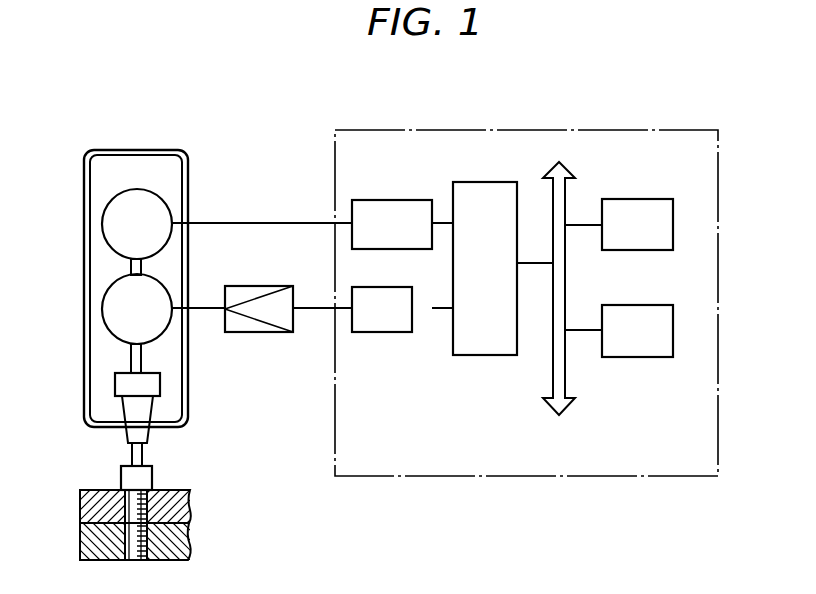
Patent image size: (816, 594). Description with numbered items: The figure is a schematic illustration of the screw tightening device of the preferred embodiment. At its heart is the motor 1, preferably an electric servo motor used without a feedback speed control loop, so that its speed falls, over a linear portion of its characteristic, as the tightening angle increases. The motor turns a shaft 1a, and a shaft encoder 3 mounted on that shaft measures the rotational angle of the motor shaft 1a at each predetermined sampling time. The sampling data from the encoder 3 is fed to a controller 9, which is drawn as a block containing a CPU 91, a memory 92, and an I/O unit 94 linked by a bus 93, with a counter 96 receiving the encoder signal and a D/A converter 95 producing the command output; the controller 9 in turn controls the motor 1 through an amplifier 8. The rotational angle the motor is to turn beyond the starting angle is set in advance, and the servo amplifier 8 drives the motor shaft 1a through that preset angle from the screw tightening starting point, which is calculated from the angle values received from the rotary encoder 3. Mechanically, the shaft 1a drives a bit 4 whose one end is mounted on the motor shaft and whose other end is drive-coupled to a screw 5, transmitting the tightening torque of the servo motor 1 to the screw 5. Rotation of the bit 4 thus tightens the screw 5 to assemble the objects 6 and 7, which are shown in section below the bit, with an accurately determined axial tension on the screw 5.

The motor 1 is at (102, 306).
The shaft 1a is at (129, 362).
The shaft encoder 3 is at (103, 218).
The bit 4 is at (115, 385).
The screw 5 is at (121, 470).
The object 6 is at (82, 503).
The object 7 is at (82, 534).
The amplifier 8 is at (280, 333).
The controller 9 is at (683, 130).
The CPU 91 is at (665, 199).
The memory 92 is at (661, 305).
The bus 93 is at (566, 170).
The I/O interface 94 is at (465, 182).
The D/A converter 95 is at (363, 333).
The counter 96 is at (368, 200).